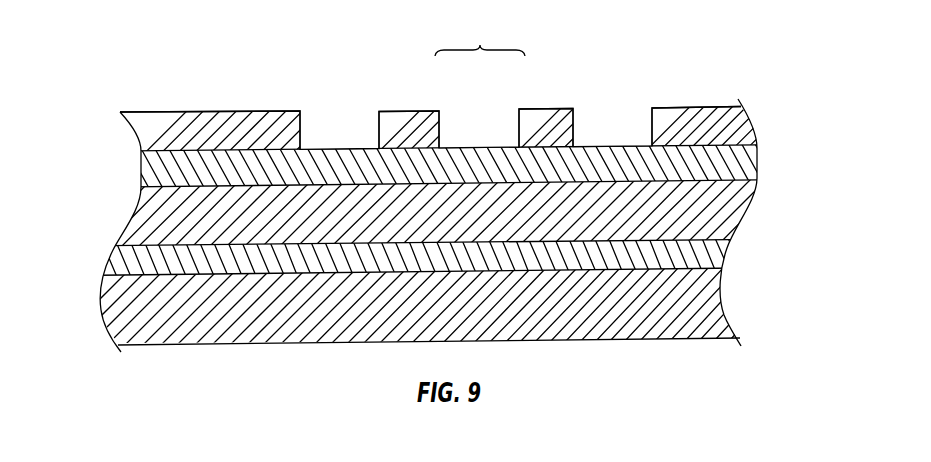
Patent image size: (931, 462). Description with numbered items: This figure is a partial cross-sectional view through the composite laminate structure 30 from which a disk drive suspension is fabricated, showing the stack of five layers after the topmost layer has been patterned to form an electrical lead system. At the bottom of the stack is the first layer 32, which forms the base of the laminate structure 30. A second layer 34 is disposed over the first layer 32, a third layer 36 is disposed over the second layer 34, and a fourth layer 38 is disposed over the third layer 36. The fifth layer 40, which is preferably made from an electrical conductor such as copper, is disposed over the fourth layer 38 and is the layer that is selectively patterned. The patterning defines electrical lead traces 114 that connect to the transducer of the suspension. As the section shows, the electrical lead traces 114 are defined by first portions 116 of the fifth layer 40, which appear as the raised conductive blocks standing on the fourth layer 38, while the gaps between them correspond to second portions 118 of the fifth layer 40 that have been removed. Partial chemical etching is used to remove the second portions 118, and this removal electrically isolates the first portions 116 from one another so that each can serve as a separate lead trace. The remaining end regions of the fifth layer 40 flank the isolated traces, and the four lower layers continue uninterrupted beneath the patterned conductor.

The composite laminate structure 30 is at (764, 246).
The first layer 32 is at (103, 310).
The second layer 34 is at (104, 258).
The third layer 36 is at (124, 230).
The fourth layer 38 is at (139, 173).
The fifth layer 40 is at (132, 132).
The electrical lead traces 114 is at (480, 37).
The first portions 116 is at (552, 108).
The second portions 118 is at (342, 112).